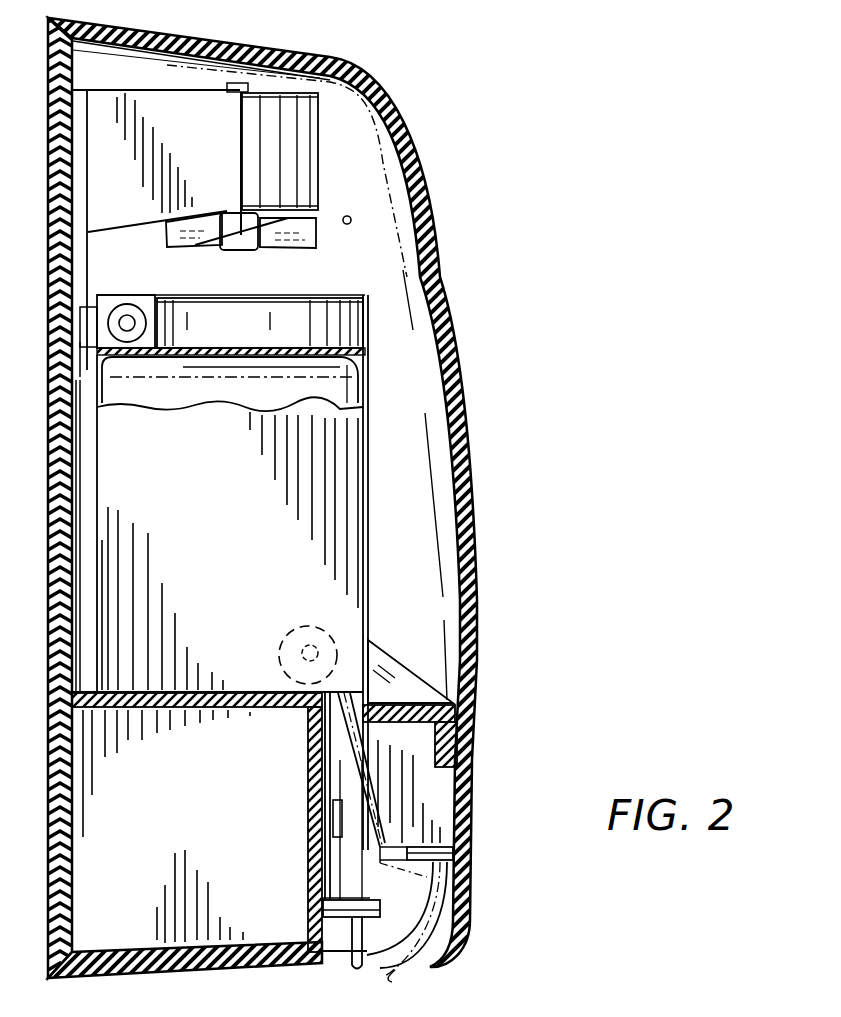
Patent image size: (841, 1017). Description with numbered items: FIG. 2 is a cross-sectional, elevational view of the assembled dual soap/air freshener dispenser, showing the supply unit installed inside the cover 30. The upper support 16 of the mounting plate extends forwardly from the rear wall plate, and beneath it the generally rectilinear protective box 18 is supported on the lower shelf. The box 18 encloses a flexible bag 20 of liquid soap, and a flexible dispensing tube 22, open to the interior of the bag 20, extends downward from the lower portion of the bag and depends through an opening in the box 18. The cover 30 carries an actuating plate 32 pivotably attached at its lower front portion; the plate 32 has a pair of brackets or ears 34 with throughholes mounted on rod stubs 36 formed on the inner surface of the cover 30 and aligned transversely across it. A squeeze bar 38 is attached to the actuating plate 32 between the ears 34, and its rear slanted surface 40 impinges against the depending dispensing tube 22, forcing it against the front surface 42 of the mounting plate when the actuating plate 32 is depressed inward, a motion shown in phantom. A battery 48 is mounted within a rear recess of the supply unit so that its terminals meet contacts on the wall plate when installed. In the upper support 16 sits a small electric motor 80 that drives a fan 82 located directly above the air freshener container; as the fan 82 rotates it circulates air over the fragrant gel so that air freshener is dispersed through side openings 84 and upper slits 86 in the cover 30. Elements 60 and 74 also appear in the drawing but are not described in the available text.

The upper support 16 is at (178, 103).
The protective box 18 is at (375, 473).
The flexible bag 20 is at (340, 387).
The dispensing tube 22 is at (350, 762).
The cover 30 is at (476, 488).
The actuating plate 32 is at (472, 892).
The ears 34 is at (400, 670).
The rod stubs 36 is at (305, 646).
The squeeze bar 38 is at (437, 788).
The rear slanted surface 40 is at (378, 840).
The front surface 42 is at (325, 882).
The battery 48 is at (140, 340).
The valve 60 is at (333, 818).
The base 74 is at (617, 1013).
The electric motor 80 is at (312, 128).
The fan 82 is at (183, 233).
The side openings 84 is at (423, 218).
The upper slits 86 is at (245, 49).